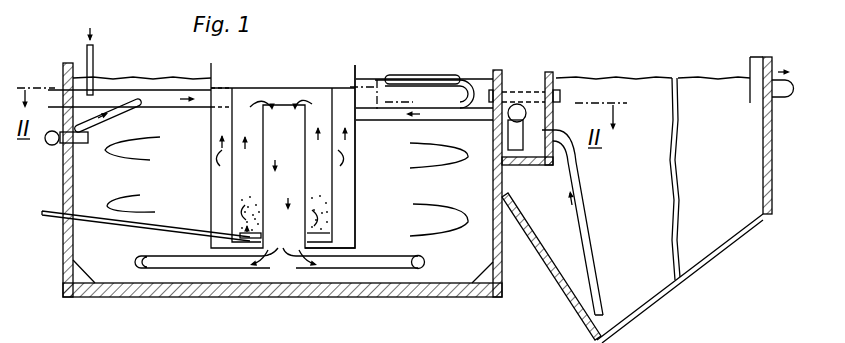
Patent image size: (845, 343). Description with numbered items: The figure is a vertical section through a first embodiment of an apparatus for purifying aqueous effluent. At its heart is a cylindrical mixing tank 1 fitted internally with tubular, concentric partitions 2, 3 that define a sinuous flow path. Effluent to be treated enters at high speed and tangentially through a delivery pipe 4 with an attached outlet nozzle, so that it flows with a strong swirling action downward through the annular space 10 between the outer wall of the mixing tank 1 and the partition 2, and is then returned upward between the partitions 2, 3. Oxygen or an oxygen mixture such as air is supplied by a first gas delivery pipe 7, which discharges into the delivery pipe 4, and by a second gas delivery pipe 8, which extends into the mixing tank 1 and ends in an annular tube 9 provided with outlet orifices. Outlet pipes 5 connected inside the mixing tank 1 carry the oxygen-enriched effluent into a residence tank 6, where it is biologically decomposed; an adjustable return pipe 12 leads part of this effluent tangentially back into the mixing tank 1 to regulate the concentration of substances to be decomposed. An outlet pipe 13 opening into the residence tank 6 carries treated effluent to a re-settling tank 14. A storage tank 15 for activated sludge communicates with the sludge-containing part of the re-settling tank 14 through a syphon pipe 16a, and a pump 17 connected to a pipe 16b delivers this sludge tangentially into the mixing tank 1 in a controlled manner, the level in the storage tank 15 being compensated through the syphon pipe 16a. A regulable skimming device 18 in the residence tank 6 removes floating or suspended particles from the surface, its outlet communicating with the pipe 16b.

The mixing tank 1 is at (319, 97).
The partition 2 is at (333, 146).
The partition 3 is at (231, 178).
The delivery pipe 4 is at (124, 102).
The outlet pipes 5 is at (192, 263).
The residence tank 6 is at (452, 275).
The first gas delivery pipe 7 is at (87, 52).
The second gas delivery pipe 8 is at (58, 222).
The annular tube 9 is at (247, 238).
The annular space 10 is at (346, 199).
The return pipe 12 is at (113, 105).
The outlet pipe 13 is at (557, 87).
The re-settling tank 14 is at (567, 277).
The storage tank 15 is at (521, 70).
The syphon pipe 16a is at (585, 238).
The pipe 16b is at (377, 108).
The pump 17 is at (516, 102).
The skimming device 18 is at (428, 78).